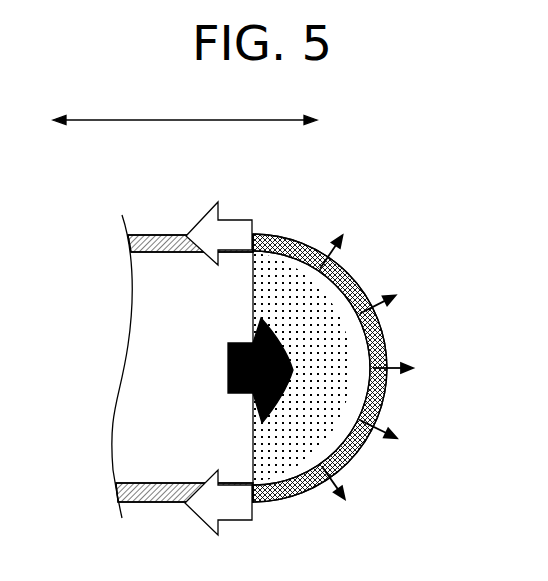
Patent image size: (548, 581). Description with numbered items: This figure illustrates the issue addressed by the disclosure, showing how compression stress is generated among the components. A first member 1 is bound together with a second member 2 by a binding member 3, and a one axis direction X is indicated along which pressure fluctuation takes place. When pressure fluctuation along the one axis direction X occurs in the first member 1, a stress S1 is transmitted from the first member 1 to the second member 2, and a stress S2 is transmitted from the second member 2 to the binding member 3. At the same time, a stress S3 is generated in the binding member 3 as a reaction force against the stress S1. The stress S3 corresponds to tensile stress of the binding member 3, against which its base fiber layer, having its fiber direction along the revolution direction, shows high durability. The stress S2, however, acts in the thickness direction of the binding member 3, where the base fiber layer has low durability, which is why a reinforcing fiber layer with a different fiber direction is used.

The first member 1 is at (177, 462).
The second member 2 is at (283, 462).
The binding member 3 is at (172, 245).
The stress S1 is at (228, 366).
The stress S2 is at (385, 365).
The stress S3 is at (233, 228).
The width direction X is at (185, 108).